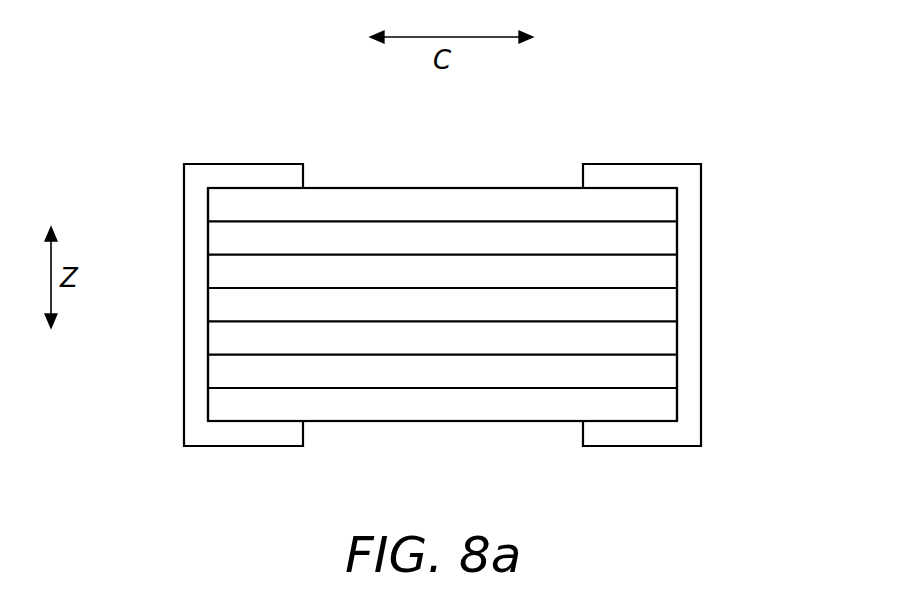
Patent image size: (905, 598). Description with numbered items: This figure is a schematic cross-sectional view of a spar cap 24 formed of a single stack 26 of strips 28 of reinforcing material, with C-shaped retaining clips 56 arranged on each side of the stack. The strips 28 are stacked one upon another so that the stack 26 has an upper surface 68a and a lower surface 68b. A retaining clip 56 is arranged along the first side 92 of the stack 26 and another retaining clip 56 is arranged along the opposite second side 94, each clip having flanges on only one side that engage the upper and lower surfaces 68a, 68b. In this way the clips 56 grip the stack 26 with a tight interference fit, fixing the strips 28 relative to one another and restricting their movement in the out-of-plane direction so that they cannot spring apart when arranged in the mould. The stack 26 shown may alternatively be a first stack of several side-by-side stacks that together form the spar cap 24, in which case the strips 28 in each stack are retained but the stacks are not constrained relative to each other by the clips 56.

The spar cap 24 is at (243, 65).
The stack 26 is at (336, 147).
The retaining clip 56 is at (198, 226).
The strip 28 is at (517, 205).
The upper surface 68a is at (437, 186).
The lower surface 68b is at (404, 422).
The side 94 is at (206, 340).
The side 92 is at (677, 303).